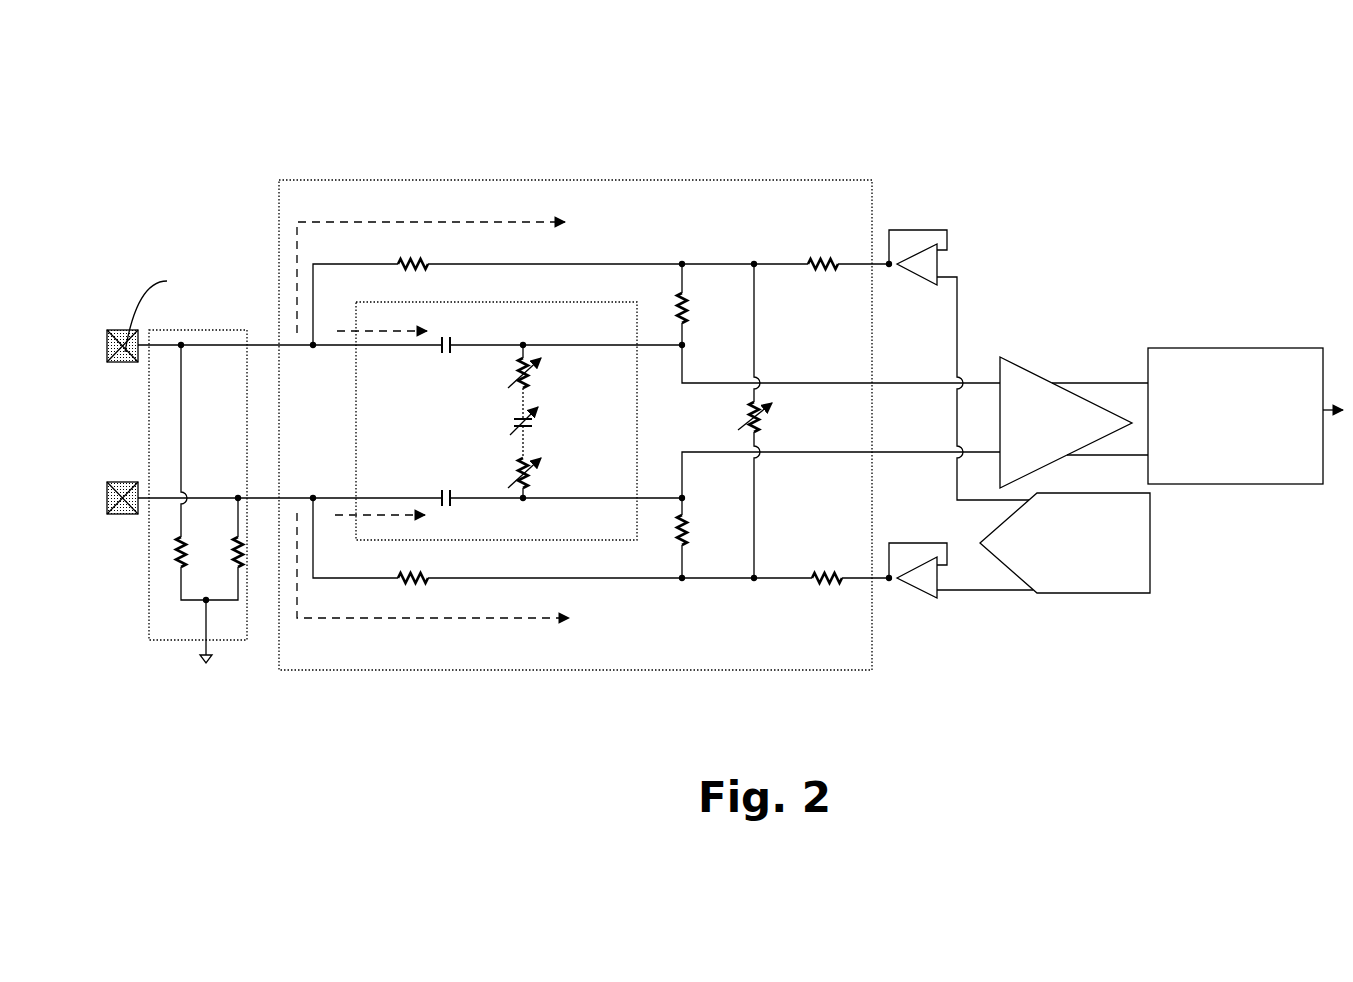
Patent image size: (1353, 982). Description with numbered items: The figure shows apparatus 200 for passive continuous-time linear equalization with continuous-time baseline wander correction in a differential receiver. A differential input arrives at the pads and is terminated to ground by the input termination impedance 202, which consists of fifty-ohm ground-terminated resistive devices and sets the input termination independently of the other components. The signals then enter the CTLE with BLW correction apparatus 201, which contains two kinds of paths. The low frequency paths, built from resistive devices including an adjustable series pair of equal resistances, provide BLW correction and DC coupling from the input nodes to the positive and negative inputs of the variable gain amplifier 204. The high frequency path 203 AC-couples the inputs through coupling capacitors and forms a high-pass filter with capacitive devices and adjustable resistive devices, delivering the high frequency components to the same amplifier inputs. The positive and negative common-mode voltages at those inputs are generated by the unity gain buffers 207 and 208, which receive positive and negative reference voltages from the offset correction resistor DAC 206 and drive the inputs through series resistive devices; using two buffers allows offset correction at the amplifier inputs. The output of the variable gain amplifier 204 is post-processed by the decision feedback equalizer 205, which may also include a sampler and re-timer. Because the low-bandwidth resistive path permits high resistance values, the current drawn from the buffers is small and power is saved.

The apparatus 200 is at (768, 128).
The CTLE with BLW correction apparatus 201 is at (547, 666).
The input termination impedance 202 is at (183, 636).
The high frequency path 203 is at (392, 323).
The VGA 204 is at (1053, 445).
The decision feedback equalizer 205 is at (1220, 456).
The offset correction resistor DAC 206 is at (1057, 585).
The unity gain buffer 207 is at (921, 248).
The unity gain buffer 208 is at (921, 596).